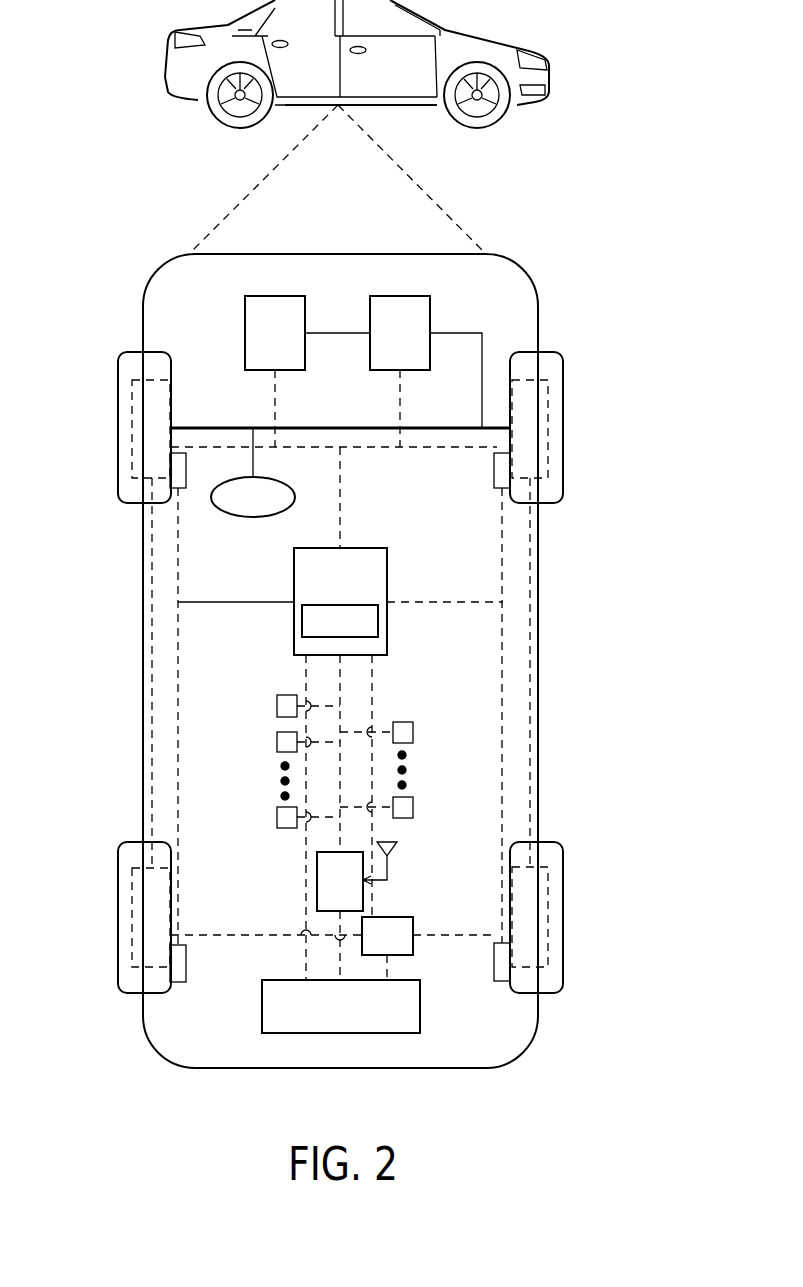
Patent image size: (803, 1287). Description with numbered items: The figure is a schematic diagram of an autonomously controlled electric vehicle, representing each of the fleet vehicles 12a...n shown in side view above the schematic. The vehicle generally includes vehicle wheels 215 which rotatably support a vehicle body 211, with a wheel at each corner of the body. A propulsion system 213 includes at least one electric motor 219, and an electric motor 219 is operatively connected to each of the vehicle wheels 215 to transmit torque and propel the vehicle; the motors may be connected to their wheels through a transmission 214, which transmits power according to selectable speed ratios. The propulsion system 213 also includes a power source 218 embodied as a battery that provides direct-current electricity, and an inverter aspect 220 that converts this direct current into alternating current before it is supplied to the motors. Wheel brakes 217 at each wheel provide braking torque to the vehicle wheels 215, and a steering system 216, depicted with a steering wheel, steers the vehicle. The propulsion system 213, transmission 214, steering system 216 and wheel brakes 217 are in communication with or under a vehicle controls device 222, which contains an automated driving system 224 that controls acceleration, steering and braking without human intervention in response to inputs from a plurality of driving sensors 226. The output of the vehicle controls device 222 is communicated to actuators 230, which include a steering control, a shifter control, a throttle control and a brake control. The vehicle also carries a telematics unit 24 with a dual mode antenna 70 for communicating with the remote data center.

The fleet vehicle 12a...n is at (165, 70).
The vehicle body 211 is at (539, 648).
The propulsion system 213 is at (245, 331).
The transmission 214 is at (430, 306).
The vehicle wheels 215 is at (171, 403).
The steering system 216 is at (253, 517).
The wheel brakes 217 is at (186, 472).
The power source 218 is at (262, 1010).
The electric motor 219 is at (130, 460).
The inverter aspect 220 is at (413, 923).
The vehicle controls device 222 is at (387, 610).
The automated driving system 224 is at (378, 628).
The driving sensors 226 is at (277, 706).
The actuators 230 is at (413, 732).
The telematics unit 24 is at (317, 885).
The dual mode antenna 70 is at (388, 872).